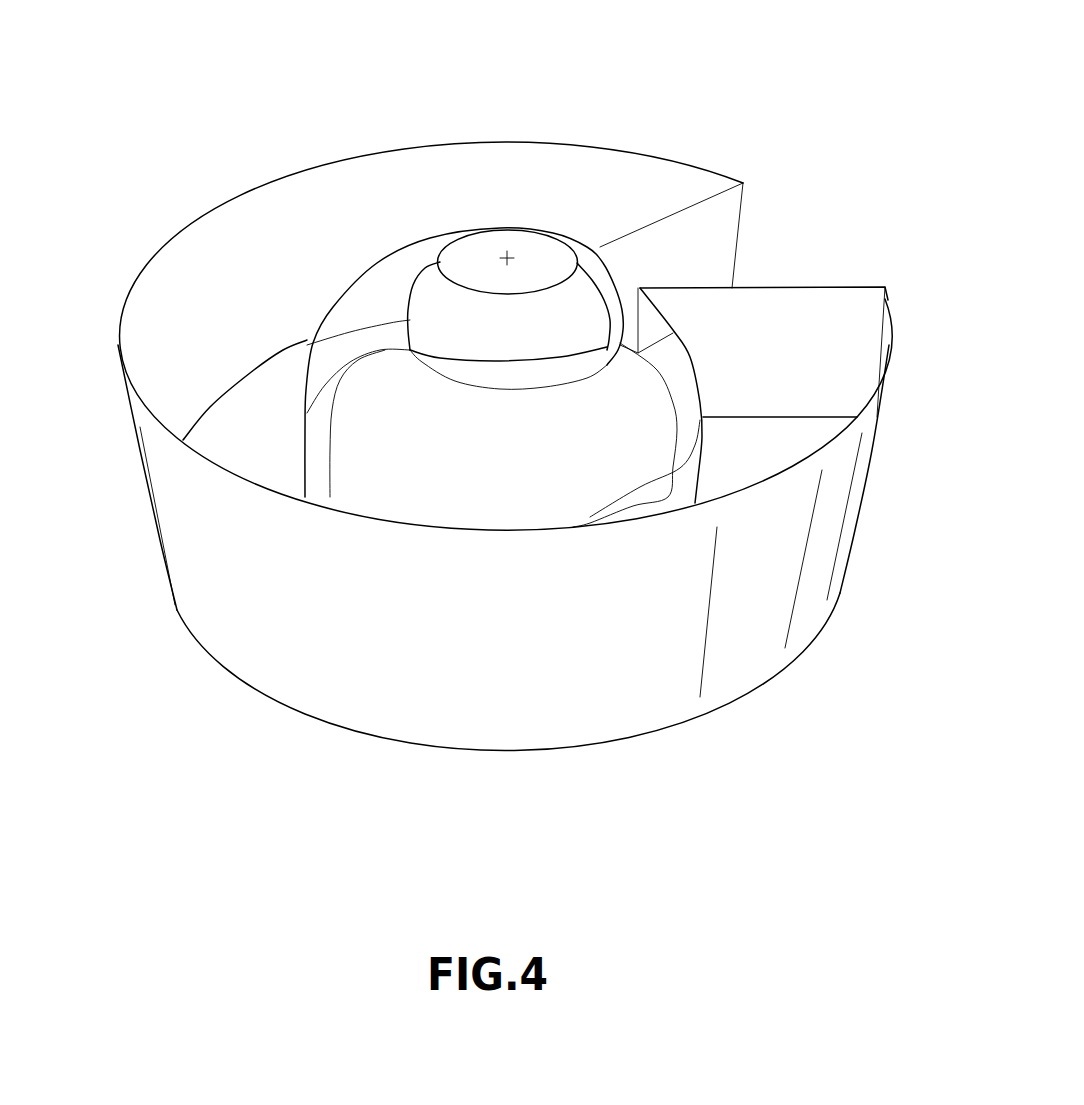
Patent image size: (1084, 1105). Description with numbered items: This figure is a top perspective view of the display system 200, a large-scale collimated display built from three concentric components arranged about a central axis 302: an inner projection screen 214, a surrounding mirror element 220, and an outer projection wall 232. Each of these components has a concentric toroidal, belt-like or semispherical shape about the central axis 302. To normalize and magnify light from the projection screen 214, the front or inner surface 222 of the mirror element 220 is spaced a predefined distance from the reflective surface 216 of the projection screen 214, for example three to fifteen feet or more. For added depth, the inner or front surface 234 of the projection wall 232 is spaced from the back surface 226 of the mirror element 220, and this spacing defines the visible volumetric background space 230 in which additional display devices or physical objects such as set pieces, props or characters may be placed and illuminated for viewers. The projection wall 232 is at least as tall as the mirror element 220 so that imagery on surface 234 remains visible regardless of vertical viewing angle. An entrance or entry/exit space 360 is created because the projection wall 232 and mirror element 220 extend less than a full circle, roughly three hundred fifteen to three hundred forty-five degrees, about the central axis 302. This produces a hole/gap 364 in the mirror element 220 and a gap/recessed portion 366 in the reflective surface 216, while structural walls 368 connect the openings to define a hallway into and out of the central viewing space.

The display system 200 is at (253, 138).
The projection screen 214 is at (560, 225).
The reflective surface 216 is at (583, 290).
The mirror element 220 is at (275, 403).
The front or inner surface 222 is at (419, 240).
The back surface 226 is at (362, 460).
The visible volumetric background space 230 is at (270, 470).
The projection wall 232 is at (797, 697).
The inner or front surface 234 is at (590, 170).
The central axis 302 is at (510, 255).
The entrance or entry/exit space 360 is at (848, 182).
The hole/gap in the mirror element 364 is at (622, 281).
The gap/recessed portion 366 is at (607, 343).
The structural walls 368 is at (830, 283).